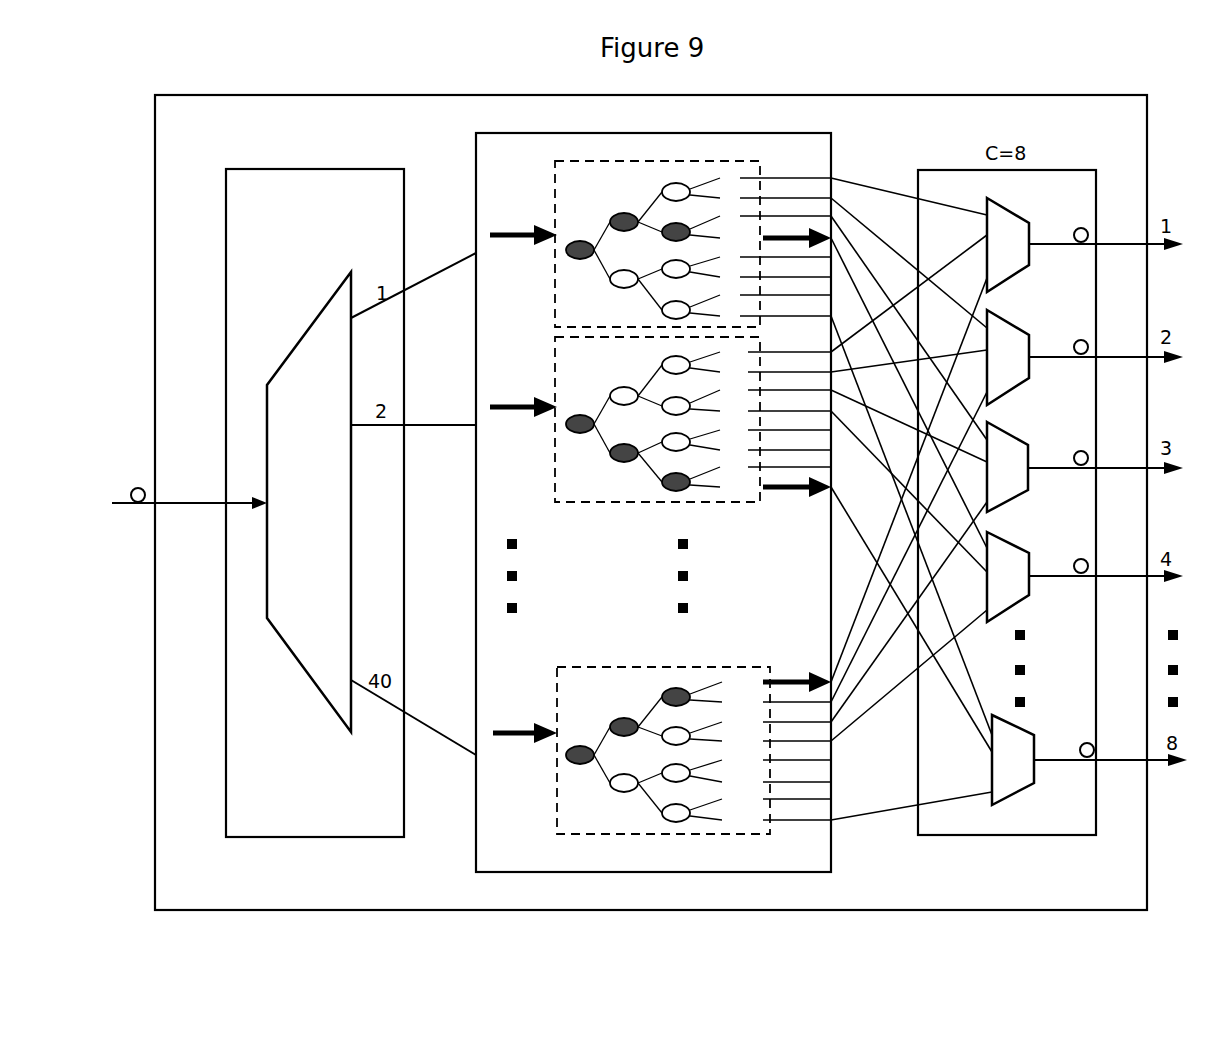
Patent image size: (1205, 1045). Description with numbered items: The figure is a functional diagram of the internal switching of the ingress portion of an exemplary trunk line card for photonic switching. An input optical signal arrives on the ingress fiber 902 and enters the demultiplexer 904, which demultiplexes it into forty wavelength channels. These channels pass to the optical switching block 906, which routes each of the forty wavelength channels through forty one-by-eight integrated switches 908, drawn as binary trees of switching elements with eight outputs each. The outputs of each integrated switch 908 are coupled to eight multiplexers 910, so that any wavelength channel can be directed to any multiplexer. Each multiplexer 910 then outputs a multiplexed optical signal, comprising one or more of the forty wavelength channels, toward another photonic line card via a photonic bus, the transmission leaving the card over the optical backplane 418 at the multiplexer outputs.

The ingress fiber 902 is at (189, 484).
The demultiplexer 904 is at (316, 652).
The optical switching block 906 is at (495, 152).
The integrated switch 908 is at (600, 178).
The multiplexer 910 is at (1030, 262).
The optical backplane 418 is at (1073, 478).